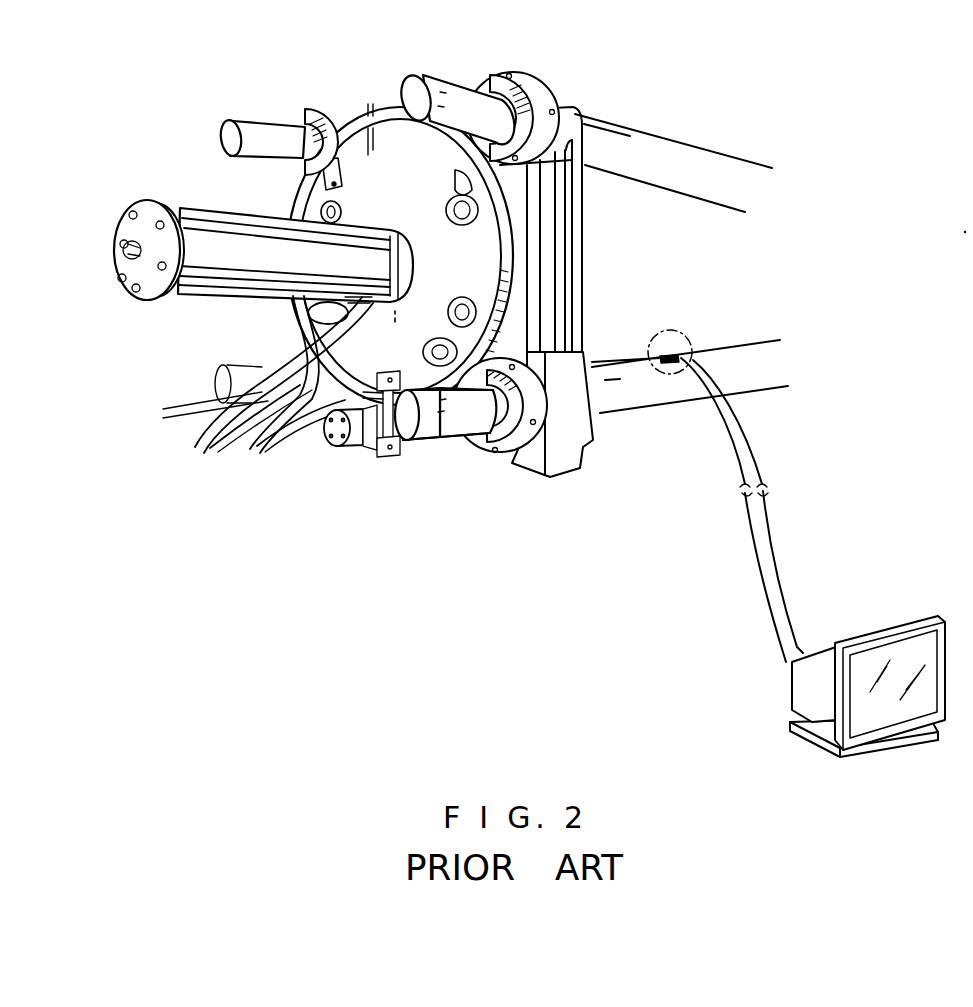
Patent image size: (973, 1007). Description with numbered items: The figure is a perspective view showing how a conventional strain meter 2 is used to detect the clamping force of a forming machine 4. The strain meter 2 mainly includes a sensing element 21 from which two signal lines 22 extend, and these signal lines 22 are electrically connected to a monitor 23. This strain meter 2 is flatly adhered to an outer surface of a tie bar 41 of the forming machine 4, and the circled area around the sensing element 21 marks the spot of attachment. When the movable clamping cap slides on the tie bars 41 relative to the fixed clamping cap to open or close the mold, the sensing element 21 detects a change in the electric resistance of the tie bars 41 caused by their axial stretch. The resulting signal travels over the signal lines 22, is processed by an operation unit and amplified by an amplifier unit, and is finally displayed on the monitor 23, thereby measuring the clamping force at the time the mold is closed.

The strain meter 2 is at (694, 330).
The sensing element 21 is at (669, 355).
The signal lines 22 is at (758, 450).
The monitor 23 is at (873, 632).
The forming machine 4 is at (185, 455).
The tie bar 41 is at (437, 425).